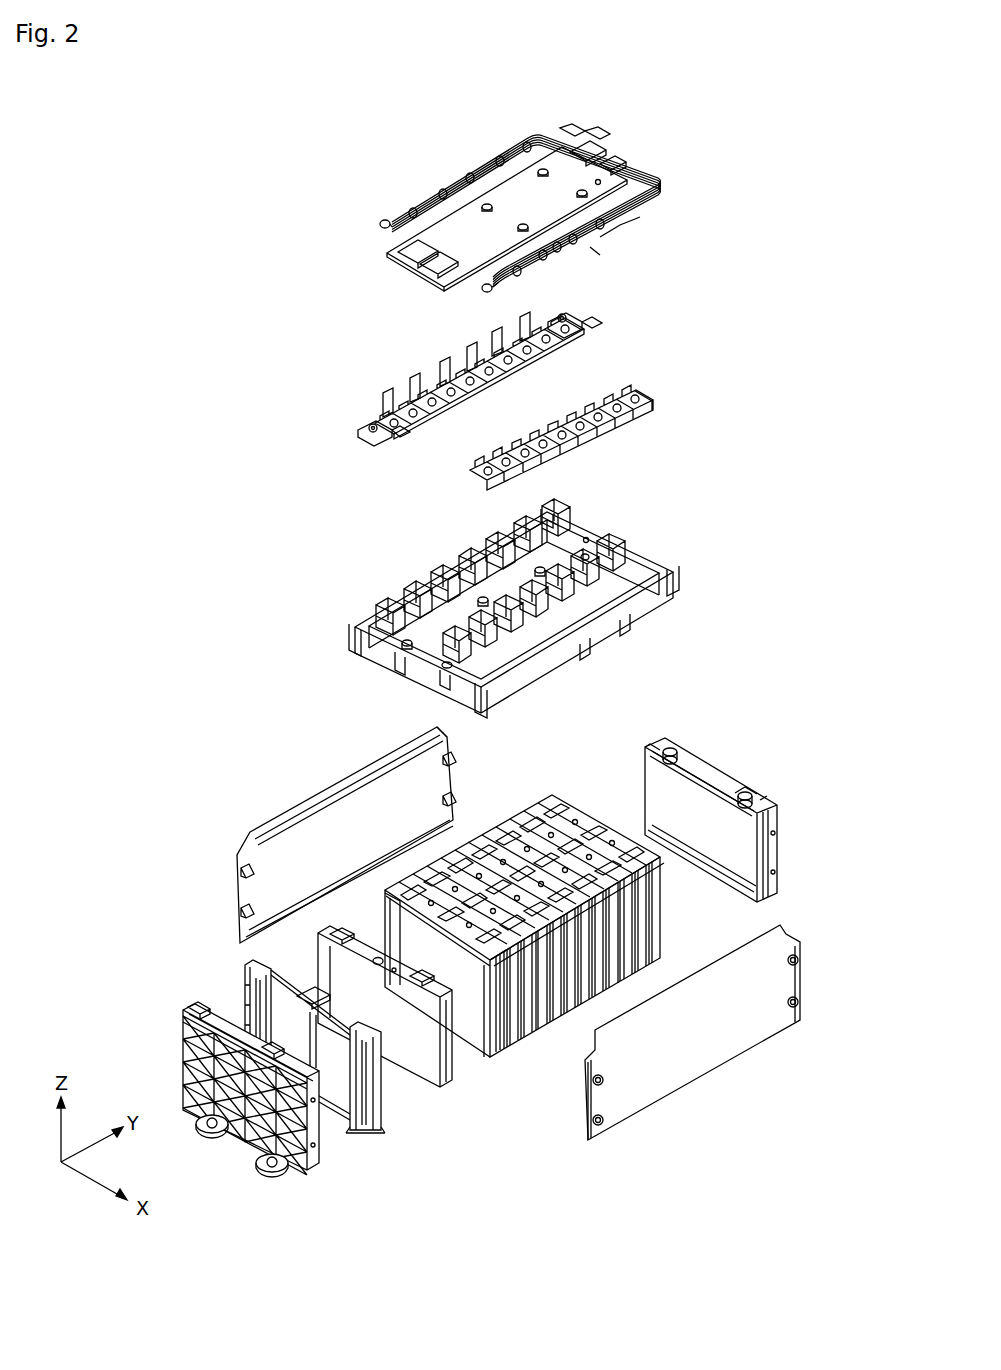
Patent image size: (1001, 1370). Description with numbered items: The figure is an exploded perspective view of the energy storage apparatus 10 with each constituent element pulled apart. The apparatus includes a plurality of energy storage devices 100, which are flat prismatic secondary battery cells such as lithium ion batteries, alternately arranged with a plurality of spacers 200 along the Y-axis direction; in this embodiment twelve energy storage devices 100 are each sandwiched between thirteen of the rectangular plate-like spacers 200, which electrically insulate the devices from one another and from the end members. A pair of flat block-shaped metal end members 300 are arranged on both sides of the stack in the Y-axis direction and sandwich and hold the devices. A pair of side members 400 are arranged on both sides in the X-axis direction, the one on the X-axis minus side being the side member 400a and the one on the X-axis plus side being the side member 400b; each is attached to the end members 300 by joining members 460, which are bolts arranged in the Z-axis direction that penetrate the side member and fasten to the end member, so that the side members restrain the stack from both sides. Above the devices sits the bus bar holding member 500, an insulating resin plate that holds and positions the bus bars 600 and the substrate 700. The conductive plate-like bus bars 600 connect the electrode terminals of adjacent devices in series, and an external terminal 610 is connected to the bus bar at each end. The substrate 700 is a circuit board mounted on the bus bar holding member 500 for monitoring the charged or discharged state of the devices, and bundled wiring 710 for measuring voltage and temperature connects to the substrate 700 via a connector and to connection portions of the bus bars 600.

The energy storage apparatus 10 is at (721, 141).
The energy storage device 100 is at (437, 1067).
The spacer 200 is at (510, 1040).
The end member 300 is at (717, 770).
The side member 400 is at (520, 933).
The side member 400a is at (342, 780).
The side member 400b is at (703, 1058).
The joining member 460 is at (456, 760).
The bus bar holding member 500 is at (625, 540).
The bus bar 600 is at (470, 363).
The external terminal 610 is at (577, 330).
The substrate 700 is at (437, 237).
The wiring 710 is at (460, 172).